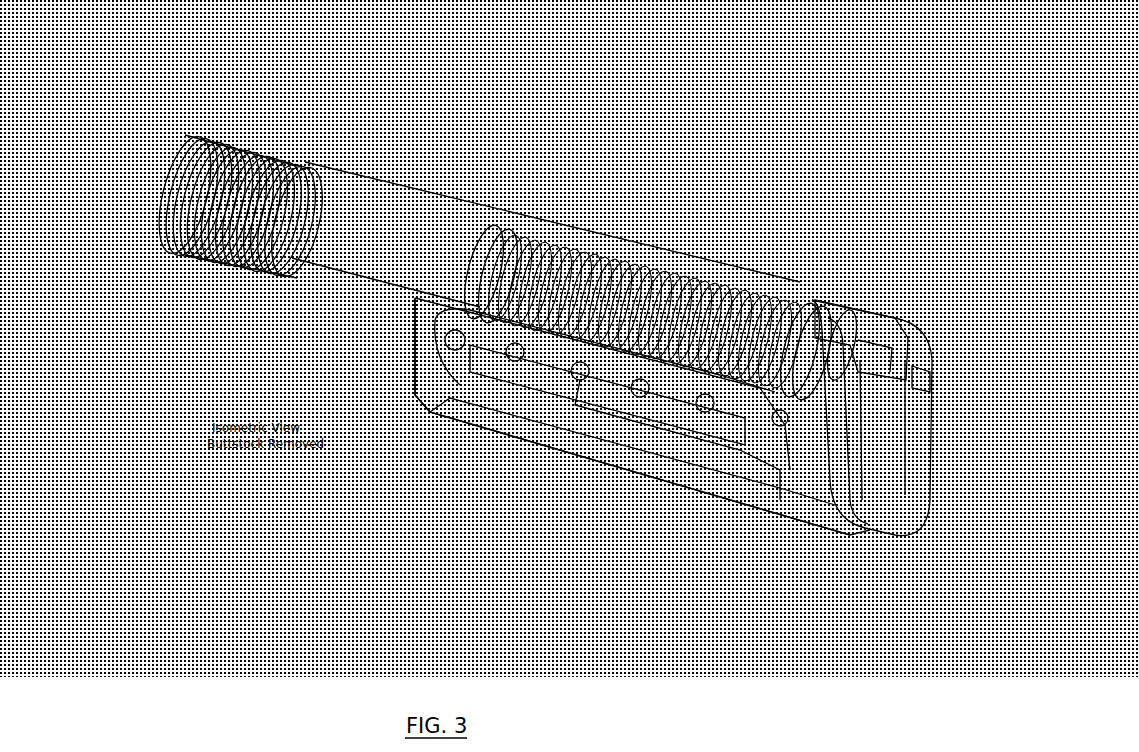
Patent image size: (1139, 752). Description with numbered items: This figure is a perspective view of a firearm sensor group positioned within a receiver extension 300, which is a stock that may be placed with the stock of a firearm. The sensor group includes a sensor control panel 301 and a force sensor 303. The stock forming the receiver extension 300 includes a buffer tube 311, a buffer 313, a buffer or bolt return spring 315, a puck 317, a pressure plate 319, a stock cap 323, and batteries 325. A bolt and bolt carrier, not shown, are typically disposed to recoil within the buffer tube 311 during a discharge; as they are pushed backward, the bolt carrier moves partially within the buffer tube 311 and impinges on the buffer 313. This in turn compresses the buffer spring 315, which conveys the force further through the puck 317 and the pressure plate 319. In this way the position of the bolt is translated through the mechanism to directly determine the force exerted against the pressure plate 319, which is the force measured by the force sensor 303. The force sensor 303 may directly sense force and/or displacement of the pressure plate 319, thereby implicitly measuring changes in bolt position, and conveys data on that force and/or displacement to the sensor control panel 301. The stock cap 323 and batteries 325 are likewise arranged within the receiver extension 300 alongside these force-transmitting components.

The receiver extension 300 is at (818, 188).
The sensor control panel 301 is at (912, 500).
The force sensor 303 is at (882, 330).
The buffer tube 311 is at (396, 178).
The buffer 313 is at (513, 230).
The buffer or bolt return spring 315 is at (600, 234).
The puck 317 is at (795, 300).
The pressure plate 319 is at (860, 312).
The stock cap 323 is at (928, 374).
The batteries 325 is at (600, 400).